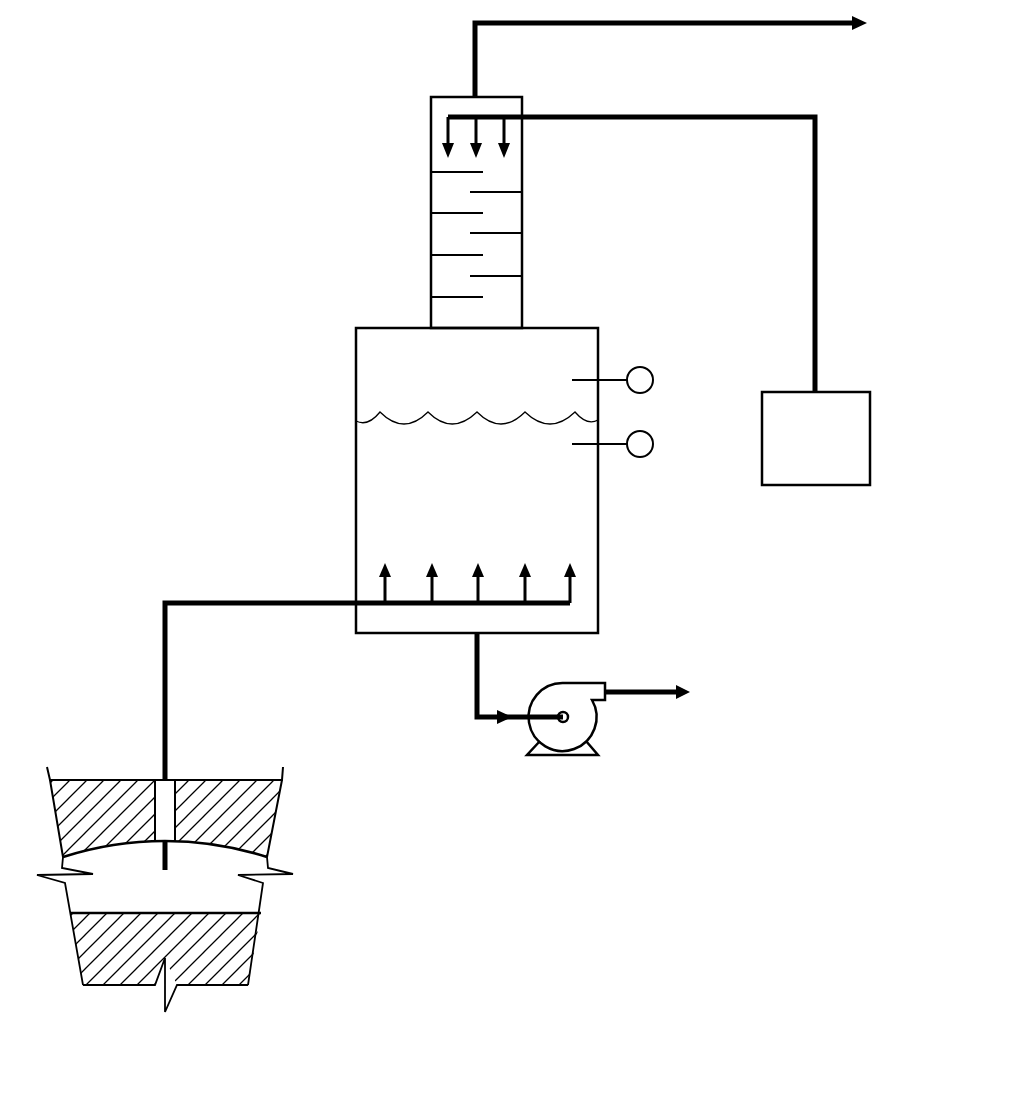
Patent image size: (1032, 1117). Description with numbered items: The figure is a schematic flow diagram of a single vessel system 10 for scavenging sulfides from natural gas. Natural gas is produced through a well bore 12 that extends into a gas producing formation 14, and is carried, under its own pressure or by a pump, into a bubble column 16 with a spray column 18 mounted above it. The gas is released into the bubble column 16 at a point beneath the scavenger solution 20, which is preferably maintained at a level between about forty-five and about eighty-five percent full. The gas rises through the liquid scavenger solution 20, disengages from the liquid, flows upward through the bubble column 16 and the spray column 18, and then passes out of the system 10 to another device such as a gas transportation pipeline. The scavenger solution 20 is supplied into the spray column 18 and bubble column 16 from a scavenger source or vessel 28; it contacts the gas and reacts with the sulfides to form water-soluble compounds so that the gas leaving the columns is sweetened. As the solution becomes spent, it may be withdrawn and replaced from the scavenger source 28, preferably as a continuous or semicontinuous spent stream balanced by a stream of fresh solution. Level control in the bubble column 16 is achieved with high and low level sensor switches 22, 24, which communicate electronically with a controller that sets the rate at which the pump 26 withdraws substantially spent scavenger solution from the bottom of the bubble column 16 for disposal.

The single vessel system 10 is at (216, 90).
The well bore 12 is at (153, 808).
The gas producing formation 14 is at (137, 900).
The bubble column 16 is at (356, 363).
The spray column 18 is at (431, 197).
The scavenger solution 20 is at (490, 489).
The high level sensor switch 22 is at (645, 369).
The low level sensor switch 24 is at (641, 457).
The pump 26 is at (598, 724).
The scavenger source 28 is at (831, 449).